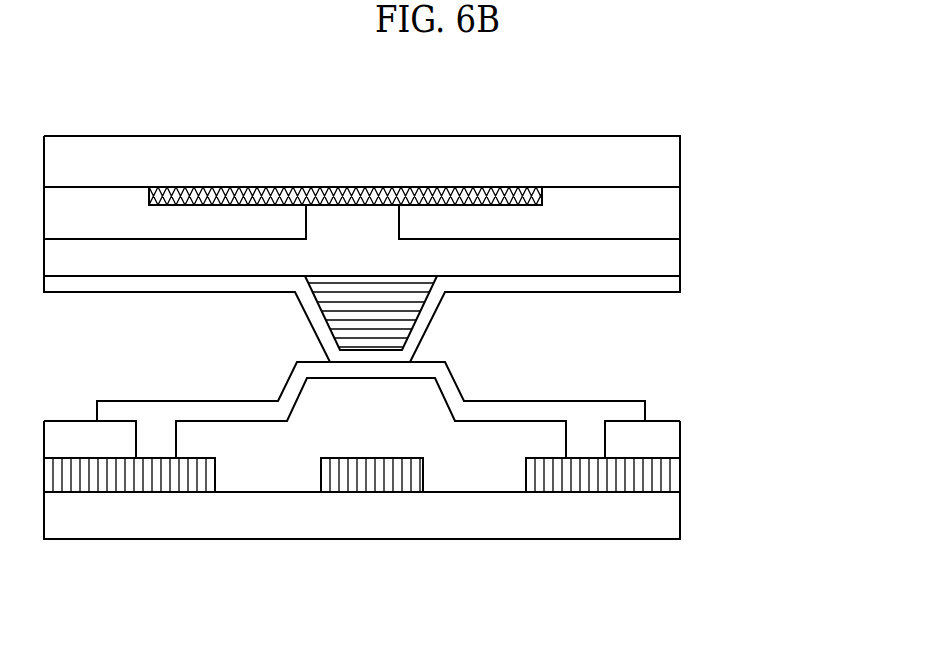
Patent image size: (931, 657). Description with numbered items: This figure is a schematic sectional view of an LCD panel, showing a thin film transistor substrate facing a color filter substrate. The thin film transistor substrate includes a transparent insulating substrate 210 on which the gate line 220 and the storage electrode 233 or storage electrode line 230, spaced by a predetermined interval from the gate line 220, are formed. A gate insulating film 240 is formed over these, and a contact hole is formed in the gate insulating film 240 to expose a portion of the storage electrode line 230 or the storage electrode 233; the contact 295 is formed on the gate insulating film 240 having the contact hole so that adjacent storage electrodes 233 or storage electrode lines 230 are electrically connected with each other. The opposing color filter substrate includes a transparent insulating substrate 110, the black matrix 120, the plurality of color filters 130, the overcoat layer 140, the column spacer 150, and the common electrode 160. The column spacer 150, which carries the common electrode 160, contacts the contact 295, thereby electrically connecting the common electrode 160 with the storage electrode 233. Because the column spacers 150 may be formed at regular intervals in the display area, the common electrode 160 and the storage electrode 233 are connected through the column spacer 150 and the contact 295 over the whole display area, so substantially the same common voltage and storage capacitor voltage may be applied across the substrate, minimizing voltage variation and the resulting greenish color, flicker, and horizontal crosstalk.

The transparent insulating substrate 110 is at (673, 168).
The black matrix 120 is at (482, 190).
The color filters 130 is at (673, 213).
The overcoat layer 140 is at (673, 255).
The column spacer 150 is at (400, 309).
The common electrode 160 is at (673, 287).
The transparent insulating substrate 210 is at (673, 512).
The gate line 220 is at (369, 480).
The storage electrode line 230 is at (435, 475).
The storage electrode 233 is at (672, 474).
The gate insulating film 240 is at (673, 439).
The contact 295 is at (620, 412).